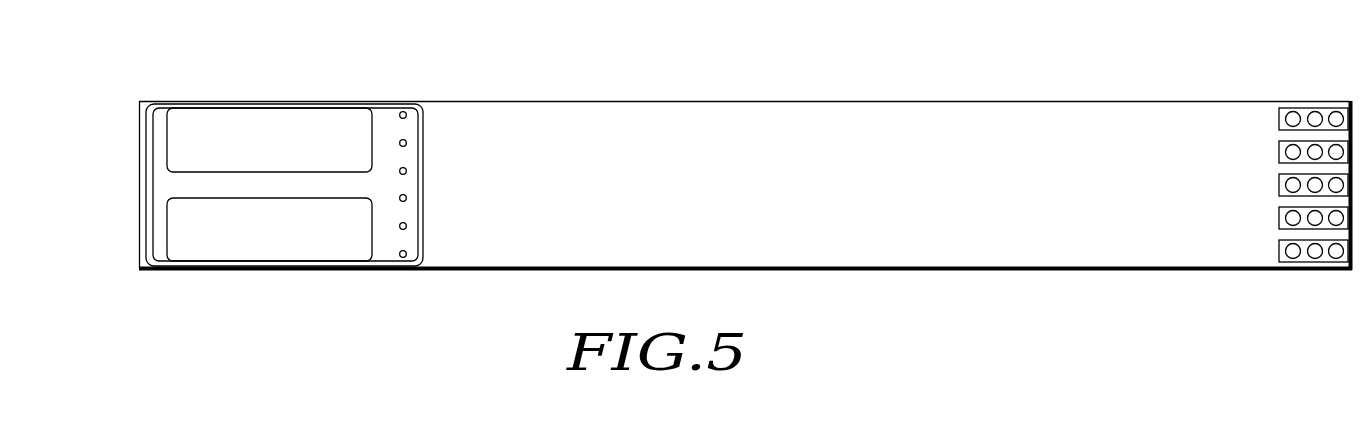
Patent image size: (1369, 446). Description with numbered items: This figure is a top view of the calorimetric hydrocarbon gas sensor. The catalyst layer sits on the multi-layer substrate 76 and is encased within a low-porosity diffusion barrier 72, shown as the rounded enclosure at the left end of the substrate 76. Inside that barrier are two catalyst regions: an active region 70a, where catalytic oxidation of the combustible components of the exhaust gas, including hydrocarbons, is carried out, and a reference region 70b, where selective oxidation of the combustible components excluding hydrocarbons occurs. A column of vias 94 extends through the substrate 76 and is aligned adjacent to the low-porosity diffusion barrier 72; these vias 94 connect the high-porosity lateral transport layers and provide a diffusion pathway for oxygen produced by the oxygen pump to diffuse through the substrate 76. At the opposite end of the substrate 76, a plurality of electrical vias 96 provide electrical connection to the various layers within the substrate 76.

The low-porosity diffusion barrier 72 is at (191, 105).
The active region 70a is at (227, 120).
The reference region 70b is at (237, 245).
The vias 94 is at (406, 141).
The multi-layer substrate 76 is at (645, 120).
The electrical vias 96 is at (1292, 110).